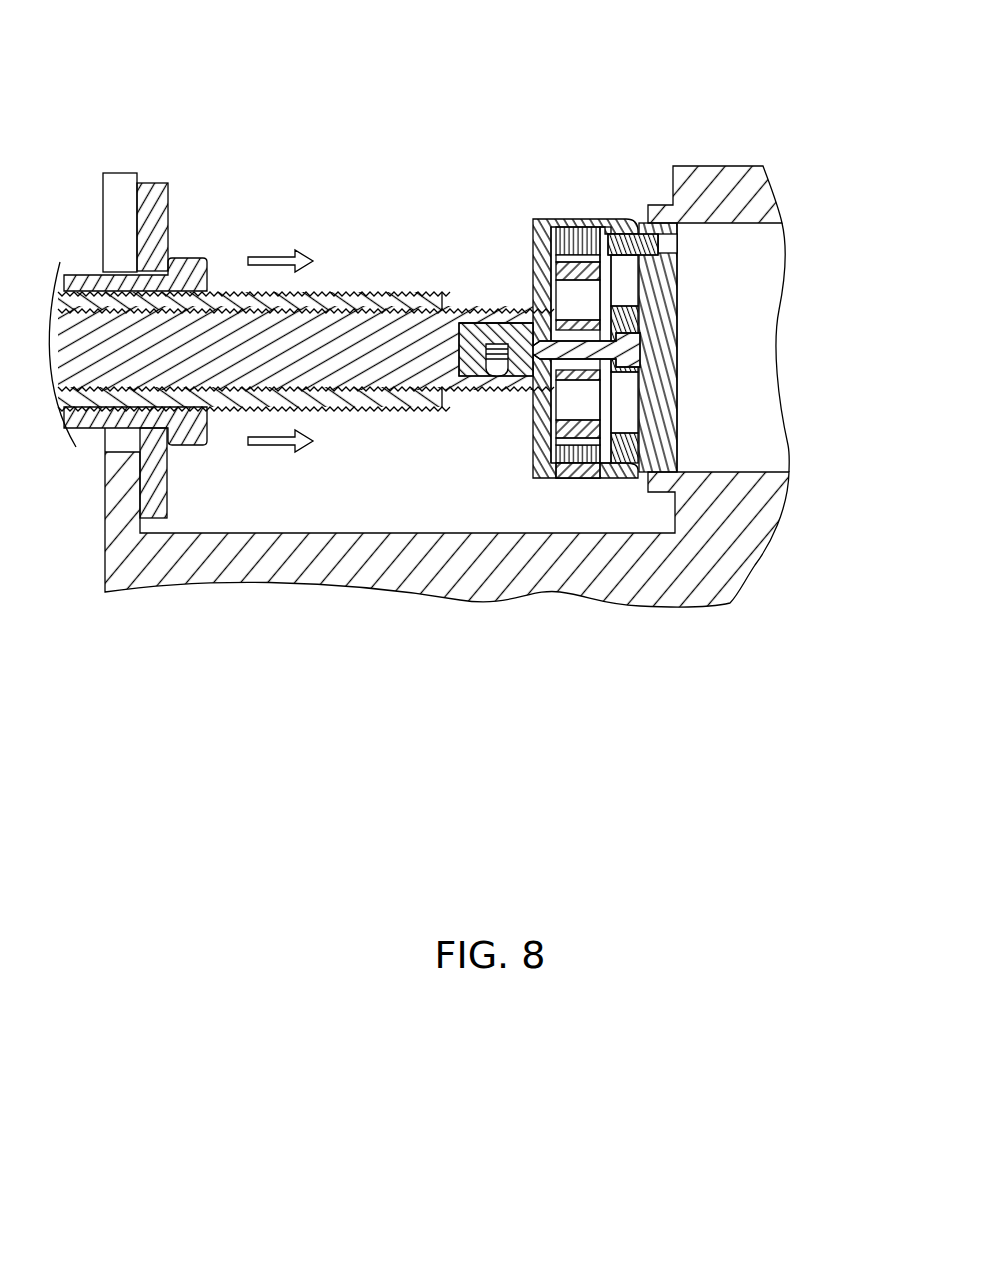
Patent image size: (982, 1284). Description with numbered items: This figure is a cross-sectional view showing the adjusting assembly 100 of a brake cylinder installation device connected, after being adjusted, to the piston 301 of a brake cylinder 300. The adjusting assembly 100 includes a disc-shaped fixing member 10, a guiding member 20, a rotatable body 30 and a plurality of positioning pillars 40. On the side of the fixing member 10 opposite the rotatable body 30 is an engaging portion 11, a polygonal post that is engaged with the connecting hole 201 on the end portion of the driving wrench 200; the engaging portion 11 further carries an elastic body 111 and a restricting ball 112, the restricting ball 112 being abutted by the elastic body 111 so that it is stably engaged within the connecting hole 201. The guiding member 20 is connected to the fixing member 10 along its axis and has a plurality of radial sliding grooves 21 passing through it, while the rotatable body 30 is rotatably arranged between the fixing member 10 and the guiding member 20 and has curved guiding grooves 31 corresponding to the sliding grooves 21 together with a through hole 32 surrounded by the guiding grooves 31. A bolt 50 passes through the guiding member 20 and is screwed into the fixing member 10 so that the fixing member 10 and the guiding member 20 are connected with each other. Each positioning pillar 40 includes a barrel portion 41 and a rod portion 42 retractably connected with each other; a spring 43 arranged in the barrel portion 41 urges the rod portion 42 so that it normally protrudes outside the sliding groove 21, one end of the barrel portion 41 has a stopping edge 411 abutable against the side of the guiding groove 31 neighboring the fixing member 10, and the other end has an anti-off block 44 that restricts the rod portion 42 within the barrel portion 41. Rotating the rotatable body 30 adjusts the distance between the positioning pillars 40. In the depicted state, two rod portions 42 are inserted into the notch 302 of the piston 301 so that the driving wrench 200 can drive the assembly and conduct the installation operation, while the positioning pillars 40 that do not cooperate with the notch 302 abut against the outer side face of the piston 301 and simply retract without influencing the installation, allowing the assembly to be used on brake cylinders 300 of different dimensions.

The adjusting assembly 100 is at (606, 92).
The driving wrench 200 is at (301, 345).
The connecting hole 201 is at (460, 308).
The fixing member 10 is at (533, 225).
The engaging portion 11 is at (496, 446).
The elastic body 111 is at (505, 322).
The restricting ball 112 is at (491, 377).
The guiding member 20 is at (628, 478).
The sliding grooves 21 is at (627, 418).
The rotatable body 30 is at (592, 478).
The guiding grooves 31 is at (635, 480).
The through hole 32 is at (577, 478).
The positioning pillars 40 is at (663, 385).
The barrel portion 41 is at (547, 296).
The stopping edge 411 is at (552, 235).
The rod portion 42 is at (720, 404).
The spring 43 is at (568, 225).
The anti-off block 44 is at (601, 232).
The bolt 50 is at (632, 353).
The brake cylinder 300 is at (727, 180).
The piston 301 is at (668, 303).
The notch 302 is at (668, 244).